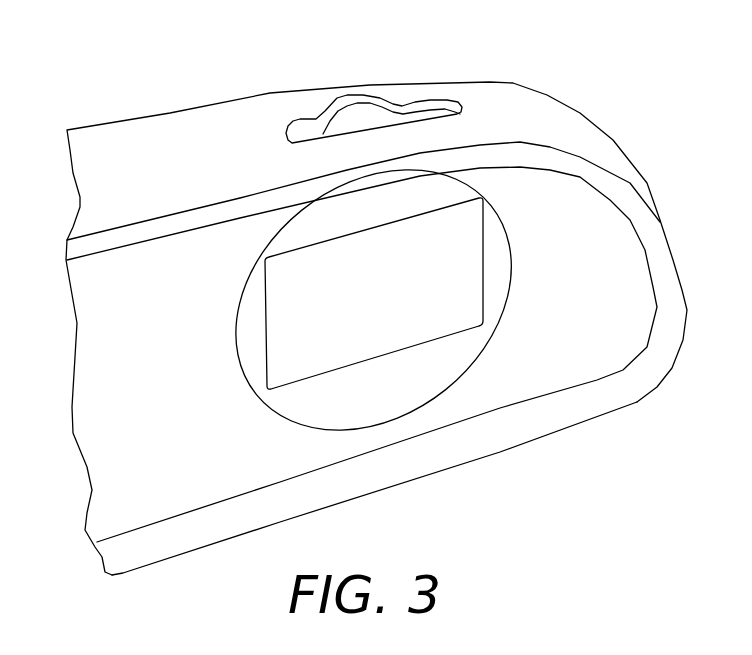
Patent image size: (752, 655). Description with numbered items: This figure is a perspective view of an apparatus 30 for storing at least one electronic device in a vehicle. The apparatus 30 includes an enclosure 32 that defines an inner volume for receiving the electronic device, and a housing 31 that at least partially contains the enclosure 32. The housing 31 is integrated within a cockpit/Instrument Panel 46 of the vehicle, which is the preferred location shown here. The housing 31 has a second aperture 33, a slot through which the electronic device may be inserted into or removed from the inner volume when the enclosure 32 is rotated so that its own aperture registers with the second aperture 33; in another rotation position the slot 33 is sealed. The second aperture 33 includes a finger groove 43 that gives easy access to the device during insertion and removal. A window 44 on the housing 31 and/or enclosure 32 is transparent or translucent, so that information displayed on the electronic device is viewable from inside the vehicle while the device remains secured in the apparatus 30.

The apparatus 30 is at (96, 28).
The housing 31 is at (227, 128).
The enclosure 32 is at (232, 398).
The second aperture 33 is at (413, 121).
The finger groove 43 is at (358, 120).
The window 44 is at (297, 326).
The cockpit/Instrument Panel 46 is at (518, 468).